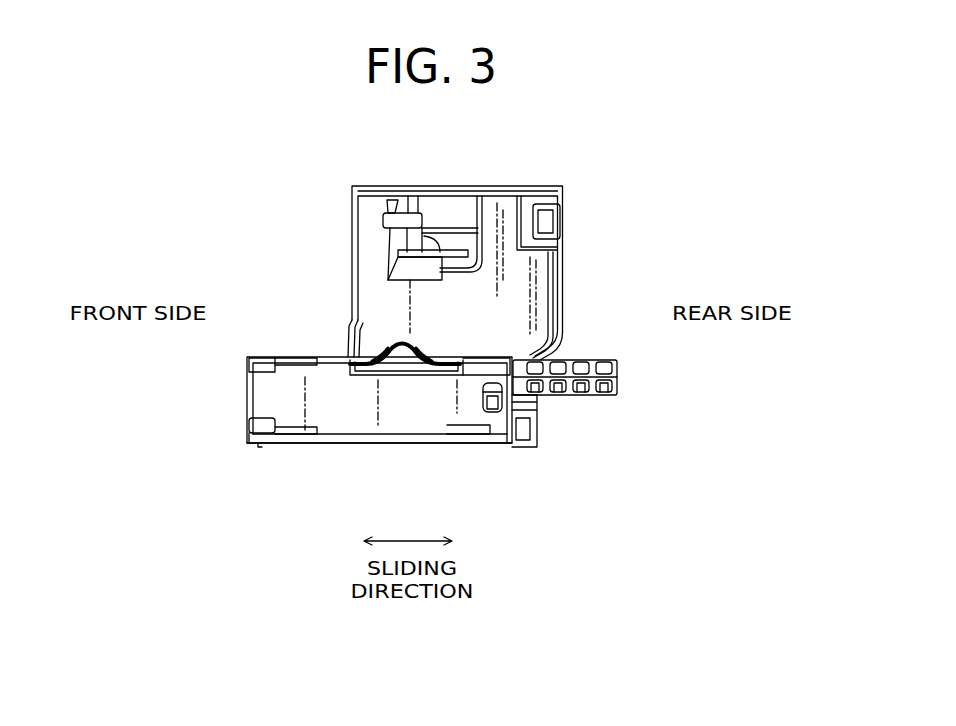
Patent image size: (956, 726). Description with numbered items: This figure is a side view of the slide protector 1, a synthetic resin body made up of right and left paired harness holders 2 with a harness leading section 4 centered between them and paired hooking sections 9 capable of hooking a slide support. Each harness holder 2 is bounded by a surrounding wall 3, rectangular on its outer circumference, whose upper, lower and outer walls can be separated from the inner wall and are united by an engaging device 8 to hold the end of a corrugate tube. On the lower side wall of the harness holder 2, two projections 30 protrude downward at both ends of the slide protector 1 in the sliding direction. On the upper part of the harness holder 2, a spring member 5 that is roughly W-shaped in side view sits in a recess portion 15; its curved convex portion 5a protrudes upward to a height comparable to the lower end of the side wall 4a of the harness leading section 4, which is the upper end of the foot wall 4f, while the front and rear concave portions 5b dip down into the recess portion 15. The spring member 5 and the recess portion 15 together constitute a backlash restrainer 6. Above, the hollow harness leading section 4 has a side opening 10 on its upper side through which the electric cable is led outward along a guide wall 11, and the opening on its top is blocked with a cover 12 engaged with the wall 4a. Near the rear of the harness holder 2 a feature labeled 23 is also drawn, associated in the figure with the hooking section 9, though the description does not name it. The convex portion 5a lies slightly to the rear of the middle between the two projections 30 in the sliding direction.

The slide protector 1 is at (633, 192).
The harness holder 2 is at (382, 458).
The surrounding wall 3 is at (343, 418).
The harness leading section 4 is at (577, 269).
The right side wall 4a is at (522, 297).
The foot wall 4f is at (348, 351).
The spring member 5 is at (400, 350).
The convex portion 5a is at (410, 352).
The concave portion 5b is at (380, 352).
The backlash restrainer 6 is at (424, 386).
The engaging device 8 is at (293, 434).
The hooking section 9 is at (605, 407).
The side opening 10 is at (453, 213).
The guide wall 11 is at (412, 207).
The cover 12 is at (525, 186).
The recess portion 15 is at (398, 368).
The engaging hole (9c) 23 is at (492, 414).
The projection 30 is at (250, 441).